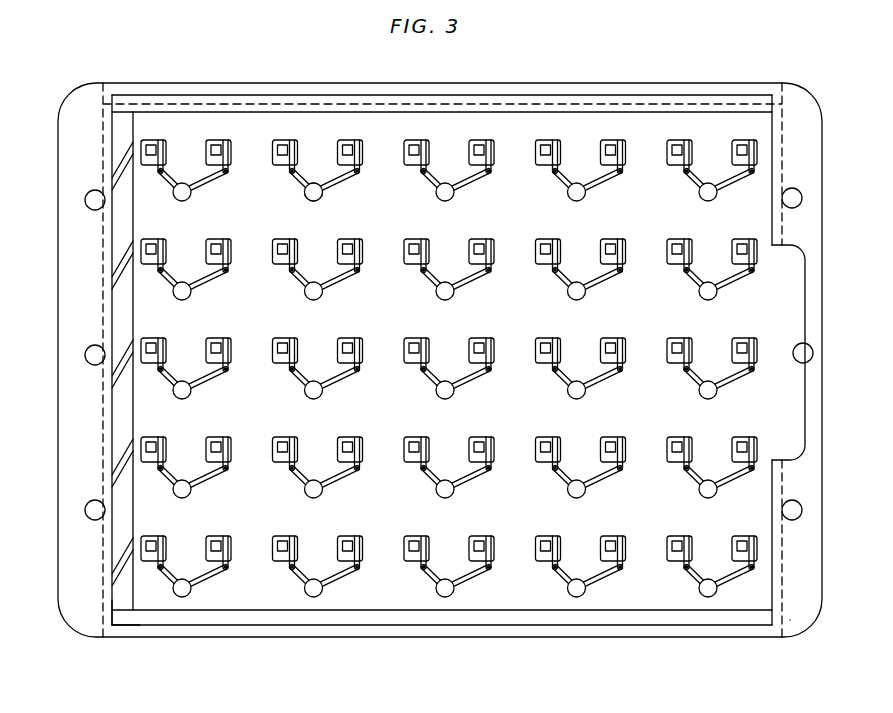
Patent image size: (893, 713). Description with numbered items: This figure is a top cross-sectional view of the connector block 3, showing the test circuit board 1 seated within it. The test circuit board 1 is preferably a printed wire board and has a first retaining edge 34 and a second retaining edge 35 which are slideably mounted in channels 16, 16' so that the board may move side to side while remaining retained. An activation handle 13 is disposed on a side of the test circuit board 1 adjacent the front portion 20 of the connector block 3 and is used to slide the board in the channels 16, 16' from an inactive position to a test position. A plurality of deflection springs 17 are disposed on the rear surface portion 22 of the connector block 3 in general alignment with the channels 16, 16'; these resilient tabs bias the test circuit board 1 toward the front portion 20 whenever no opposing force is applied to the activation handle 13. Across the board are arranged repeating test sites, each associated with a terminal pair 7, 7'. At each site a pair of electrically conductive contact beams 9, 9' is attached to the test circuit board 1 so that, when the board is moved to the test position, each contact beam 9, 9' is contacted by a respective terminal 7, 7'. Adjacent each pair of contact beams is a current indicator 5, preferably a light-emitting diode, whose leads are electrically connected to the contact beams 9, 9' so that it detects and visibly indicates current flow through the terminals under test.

The test circuit board 1 is at (517, 145).
The connector block 3 is at (825, 622).
The current indicator 5 is at (232, 210).
The terminal 7 is at (160, 107).
The terminal 7' is at (230, 106).
The contact beam 9 is at (189, 112).
The contact beam 9' is at (263, 113).
The activation handle 13 is at (788, 253).
The channel 16 is at (126, 646).
The channel 16' is at (784, 334).
The deflection spring 17 is at (124, 157).
The front portion 20 is at (828, 305).
The rear surface portion 22 is at (52, 310).
The first retaining edge 34 is at (178, 612).
The second retaining edge 35 is at (735, 105).